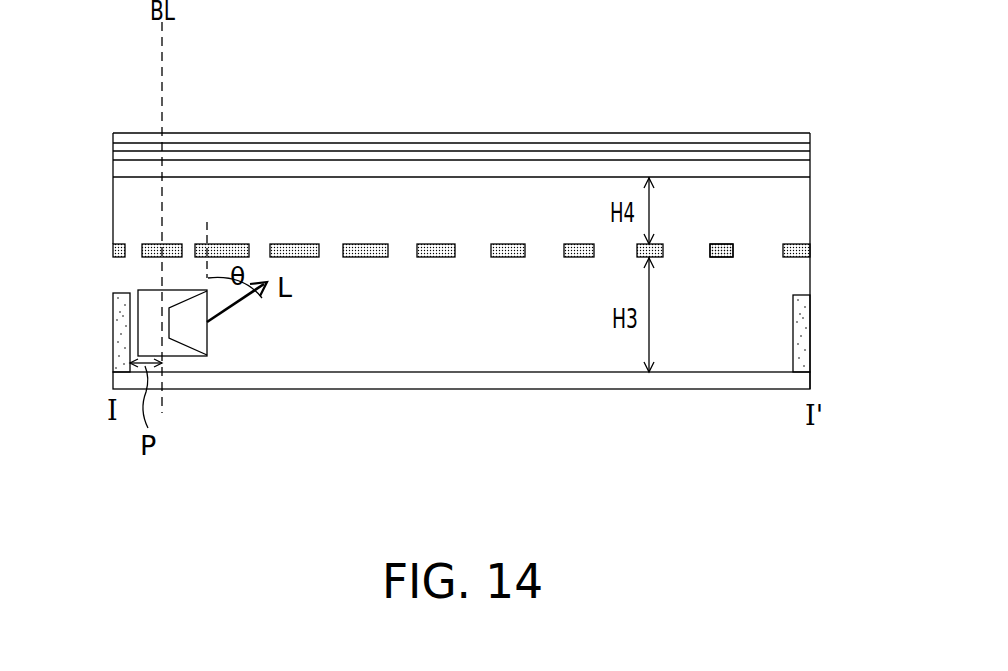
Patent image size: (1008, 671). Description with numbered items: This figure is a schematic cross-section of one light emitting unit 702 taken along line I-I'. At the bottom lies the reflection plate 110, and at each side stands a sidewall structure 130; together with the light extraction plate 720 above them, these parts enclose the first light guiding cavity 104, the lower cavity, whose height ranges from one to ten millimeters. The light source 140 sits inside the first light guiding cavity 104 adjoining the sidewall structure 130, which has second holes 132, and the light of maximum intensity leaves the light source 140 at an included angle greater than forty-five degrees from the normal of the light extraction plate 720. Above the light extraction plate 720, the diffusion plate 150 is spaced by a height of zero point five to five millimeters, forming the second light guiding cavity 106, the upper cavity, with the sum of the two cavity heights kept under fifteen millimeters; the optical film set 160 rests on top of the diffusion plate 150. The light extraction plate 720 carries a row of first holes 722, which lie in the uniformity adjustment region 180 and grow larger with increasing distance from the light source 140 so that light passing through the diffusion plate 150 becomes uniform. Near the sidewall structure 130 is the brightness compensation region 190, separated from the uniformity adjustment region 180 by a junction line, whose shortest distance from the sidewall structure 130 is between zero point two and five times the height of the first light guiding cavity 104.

The light emitting unit 702 is at (880, 474).
The reflection plate 110 is at (797, 381).
The sidewall structure 130 is at (805, 338).
The second holes 132 is at (124, 270).
The light source 140 is at (152, 326).
The diffusion plate 150 is at (805, 172).
The optical film set 160 is at (818, 161).
The light extraction plate 720 is at (810, 253).
The first holes 722 is at (745, 258).
The first light guiding cavity 104 is at (465, 332).
The second light guiding cavity 106 is at (418, 195).
The uniformity adjustment region 180 is at (793, 86).
The brightness compensation region 190 is at (162, 85).